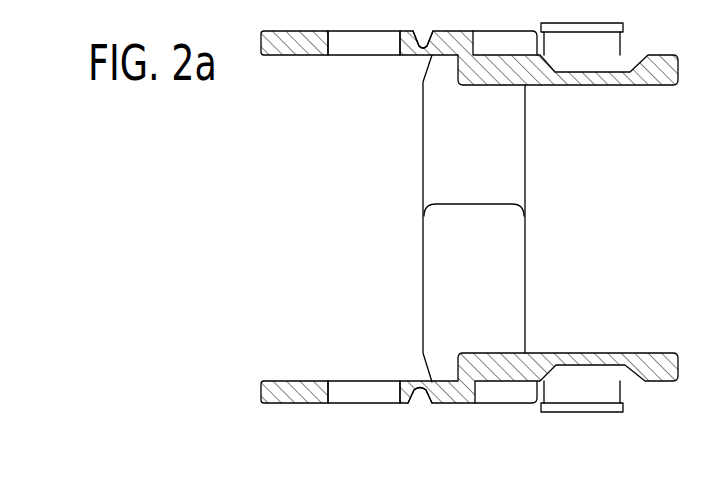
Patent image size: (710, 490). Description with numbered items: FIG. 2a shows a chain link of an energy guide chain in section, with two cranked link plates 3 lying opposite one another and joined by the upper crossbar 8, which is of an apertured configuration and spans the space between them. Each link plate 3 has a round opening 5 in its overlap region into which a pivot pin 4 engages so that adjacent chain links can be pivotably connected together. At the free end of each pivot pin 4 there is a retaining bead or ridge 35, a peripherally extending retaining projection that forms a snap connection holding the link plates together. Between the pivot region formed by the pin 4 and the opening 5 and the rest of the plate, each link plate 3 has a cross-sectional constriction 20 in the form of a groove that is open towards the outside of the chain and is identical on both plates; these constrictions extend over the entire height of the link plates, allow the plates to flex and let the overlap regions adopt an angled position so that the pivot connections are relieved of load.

The link plate 3 is at (293, 390).
The round opening 5 is at (357, 392).
The cross-sectional constriction 20 is at (418, 395).
The apertured crossbar 8 is at (518, 271).
The retaining bead 35 is at (555, 407).
The pivot pin 4 is at (599, 393).